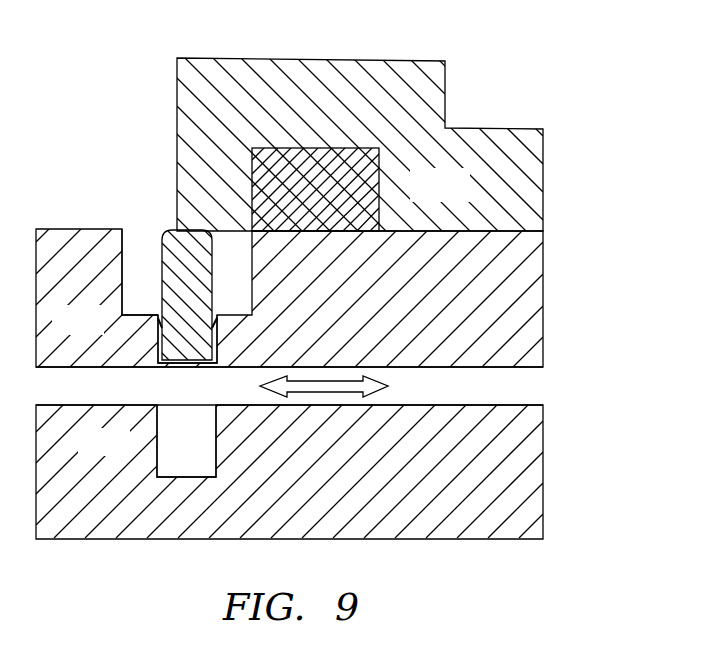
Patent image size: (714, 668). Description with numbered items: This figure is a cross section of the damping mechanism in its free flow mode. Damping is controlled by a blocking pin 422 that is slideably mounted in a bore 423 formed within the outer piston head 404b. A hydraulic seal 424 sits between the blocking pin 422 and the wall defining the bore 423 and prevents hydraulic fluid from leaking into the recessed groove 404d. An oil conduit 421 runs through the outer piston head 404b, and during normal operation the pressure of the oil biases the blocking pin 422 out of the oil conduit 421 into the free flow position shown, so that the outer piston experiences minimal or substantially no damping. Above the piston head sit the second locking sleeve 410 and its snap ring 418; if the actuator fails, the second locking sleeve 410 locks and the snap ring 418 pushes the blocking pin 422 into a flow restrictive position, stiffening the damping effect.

The second locking sleeve 410 is at (370, 80).
The snap ring 418 is at (367, 207).
The outer piston head 404b is at (525, 283).
The recessed groove 404d is at (148, 260).
The oil conduit 421 is at (523, 390).
The blocking pin 422 is at (200, 348).
The bore 423 is at (180, 463).
The hydraulic seal 424 is at (160, 346).